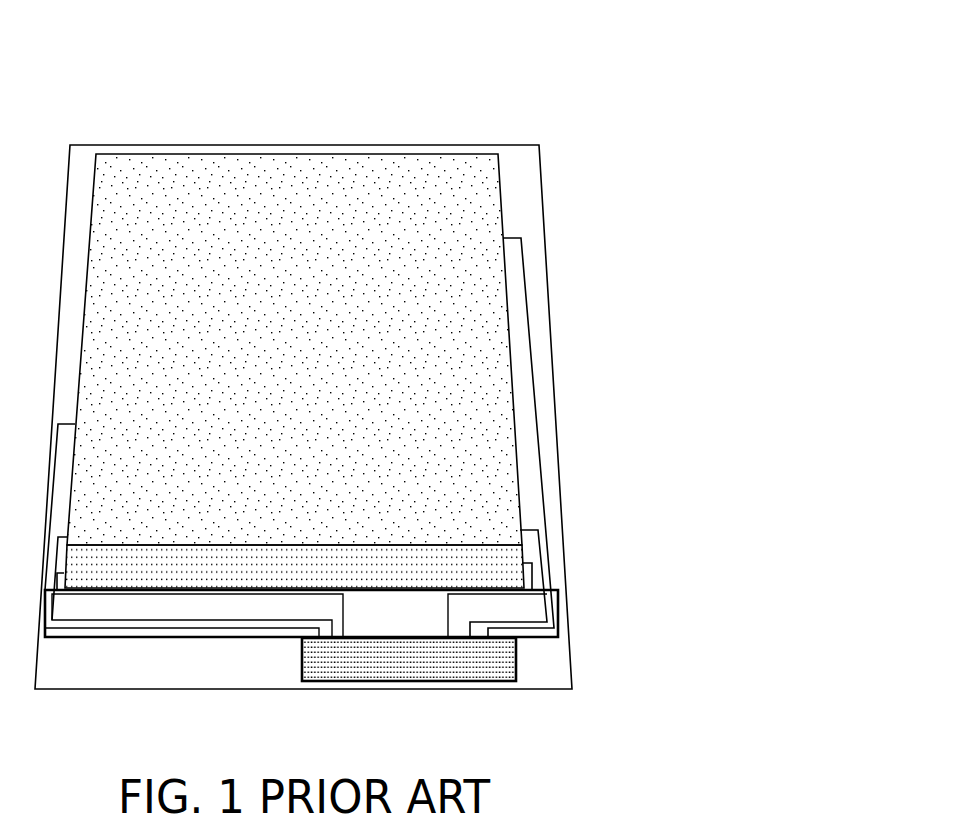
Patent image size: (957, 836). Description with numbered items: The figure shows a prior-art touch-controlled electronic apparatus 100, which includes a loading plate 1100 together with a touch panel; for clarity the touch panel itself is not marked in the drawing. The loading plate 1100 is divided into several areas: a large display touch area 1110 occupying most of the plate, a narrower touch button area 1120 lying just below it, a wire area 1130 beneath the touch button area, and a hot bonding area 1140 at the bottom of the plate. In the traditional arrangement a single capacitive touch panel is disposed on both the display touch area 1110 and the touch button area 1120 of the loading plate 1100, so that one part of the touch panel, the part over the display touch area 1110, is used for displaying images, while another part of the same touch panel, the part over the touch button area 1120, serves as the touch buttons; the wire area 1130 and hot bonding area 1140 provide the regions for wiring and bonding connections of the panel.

The touch-controlled electronic apparatus 100 is at (351, 350).
The loading plate 1100 is at (542, 192).
The display touch area 1110 is at (487, 422).
The touch button area 1120 is at (512, 563).
The wire area 1130 is at (558, 610).
The hot bonding area 1140 is at (510, 663).